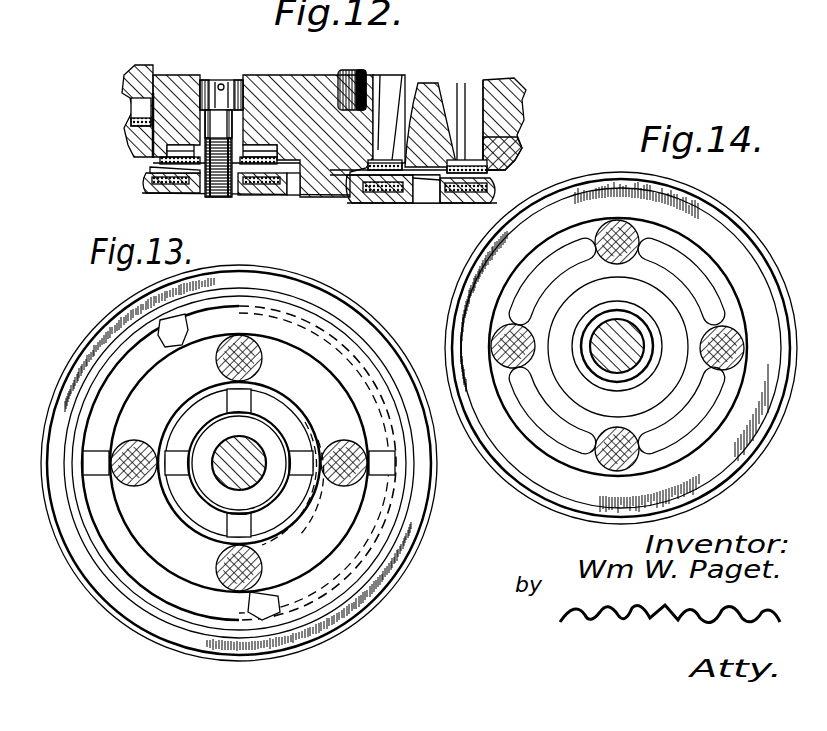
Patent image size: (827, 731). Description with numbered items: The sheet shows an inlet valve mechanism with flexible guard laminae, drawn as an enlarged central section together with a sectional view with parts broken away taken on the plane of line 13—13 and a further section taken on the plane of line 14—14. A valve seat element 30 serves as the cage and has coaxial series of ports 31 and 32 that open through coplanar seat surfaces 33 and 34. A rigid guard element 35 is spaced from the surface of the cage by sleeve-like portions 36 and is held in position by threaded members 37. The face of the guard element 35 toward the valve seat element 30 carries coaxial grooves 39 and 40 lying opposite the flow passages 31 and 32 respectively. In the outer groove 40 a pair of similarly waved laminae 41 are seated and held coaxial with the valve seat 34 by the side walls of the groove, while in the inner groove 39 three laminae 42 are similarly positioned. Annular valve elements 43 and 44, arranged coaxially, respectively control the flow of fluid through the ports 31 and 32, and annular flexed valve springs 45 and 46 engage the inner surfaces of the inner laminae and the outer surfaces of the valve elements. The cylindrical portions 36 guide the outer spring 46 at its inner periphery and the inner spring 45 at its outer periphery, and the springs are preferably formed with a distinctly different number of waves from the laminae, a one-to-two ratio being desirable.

In FIG. 12, the section line 13— 13 is at (160, 158).
In FIG. 12, the section line 14— 14 is at (200, 167).
In FIG. 12, the valve seat element 30 is at (493, 85).
In FIG. 13, the valve seat element 30 is at (100, 585).
In FIG. 12, the ports 31 is at (393, 160).
In FIG. 13, the ports 31 is at (190, 500).
In FIG. 12, the ports 32 is at (463, 160).
In FIG. 13, the ports 32 is at (137, 355).
In FIG. 12, the seat surface 33 is at (388, 160).
In FIG. 12, the seat surface 34 is at (487, 166).
In FIG. 12, the rigid guard element 35 is at (388, 203).
In FIG. 14, the rigid guard element 35 is at (735, 222).
In FIG. 12, the sleeve-like portions 36 is at (205, 190).
In FIG. 14, the sleeve-like portions 36 is at (503, 400).
In FIG. 12, the threaded members 37 is at (222, 86).
In FIG. 13, the threaded members 37 is at (108, 480).
In FIG. 14, the threaded members 37 is at (648, 338).
In FIG. 12, the inner groove 39 is at (372, 203).
In FIG. 14, the inner groove 39 is at (680, 305).
In FIG. 12, the outer groove 40 is at (472, 200).
In FIG. 14, the outer groove 40 is at (540, 478).
In FIG. 12, the waved laminae 41 is at (158, 194).
In FIG. 12, the laminae 42 is at (261, 190).
In FIG. 12, the valve element 43 is at (420, 165).
In FIG. 13, the valve element 43 is at (298, 430).
In FIG. 12, the valve element 44 is at (520, 102).
In FIG. 13, the valve element 44 is at (362, 388).
In FIG. 12, the valve spring 45 is at (348, 192).
In FIG. 12, the valve spring 46 is at (450, 186).